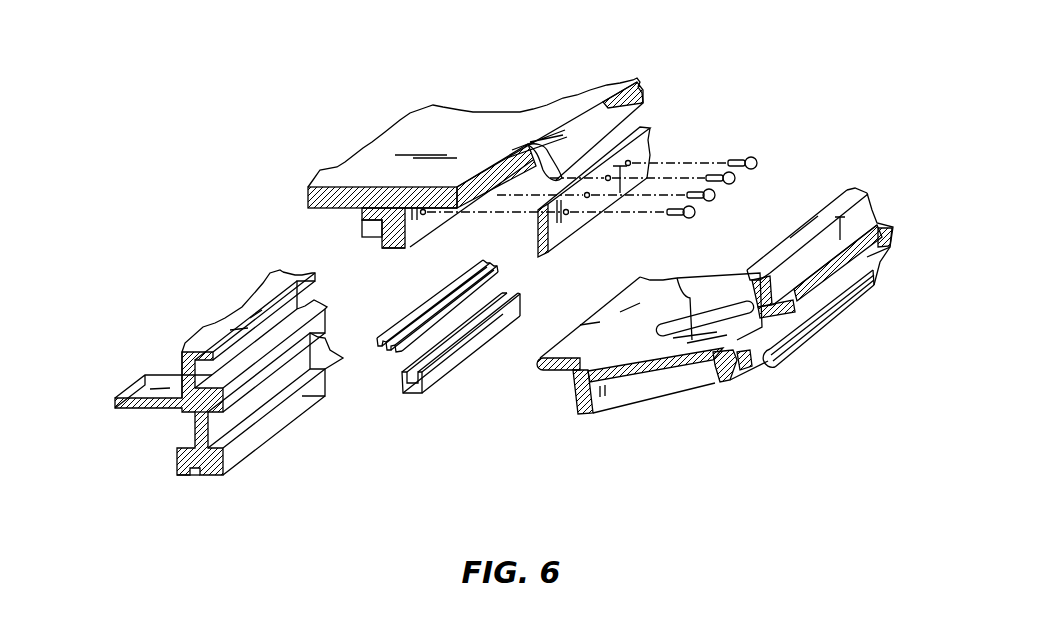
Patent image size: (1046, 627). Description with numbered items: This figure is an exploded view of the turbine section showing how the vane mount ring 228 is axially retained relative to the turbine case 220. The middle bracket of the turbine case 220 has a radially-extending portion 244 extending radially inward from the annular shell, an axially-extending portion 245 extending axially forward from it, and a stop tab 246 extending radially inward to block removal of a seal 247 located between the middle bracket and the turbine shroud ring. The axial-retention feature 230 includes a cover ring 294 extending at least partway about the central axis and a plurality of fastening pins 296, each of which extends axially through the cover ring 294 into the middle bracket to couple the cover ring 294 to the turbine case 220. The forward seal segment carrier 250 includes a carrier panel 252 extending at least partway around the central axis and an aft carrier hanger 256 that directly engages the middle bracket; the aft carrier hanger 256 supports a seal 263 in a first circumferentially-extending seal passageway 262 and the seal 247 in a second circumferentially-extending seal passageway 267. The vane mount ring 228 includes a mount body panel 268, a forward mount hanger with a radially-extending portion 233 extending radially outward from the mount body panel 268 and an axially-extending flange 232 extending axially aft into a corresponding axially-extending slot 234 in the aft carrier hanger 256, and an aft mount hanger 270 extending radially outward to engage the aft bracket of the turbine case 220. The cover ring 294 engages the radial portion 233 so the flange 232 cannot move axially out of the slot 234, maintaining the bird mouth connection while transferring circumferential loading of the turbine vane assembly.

The turbine case 220 is at (443, 78).
The radially-extending portion 244 is at (376, 212).
The axially-extending portion 245 is at (358, 230).
The stop tab 246 is at (403, 256).
The cover ring 294 is at (660, 138).
The axial-retention feature 230 is at (711, 126).
The fastening pins 296 is at (758, 143).
The seal 247 is at (502, 274).
The seal 263 is at (423, 404).
The axially-extending flange 232 is at (547, 382).
The radially-extending portion 233 is at (680, 295).
The mount body panel 268 is at (726, 292).
The aft mount hanger 270 is at (829, 196).
The vane mount ring 228 is at (892, 196).
The forward seal segment carrier 250 is at (146, 291).
The aft carrier hanger 256 is at (209, 310).
The carrier panel 252 is at (134, 380).
The second circumferentially-extending seal passageway 267 is at (180, 388).
The axially-extending slot 234 is at (190, 423).
The first circumferentially-extending seal passageway 262 is at (205, 468).